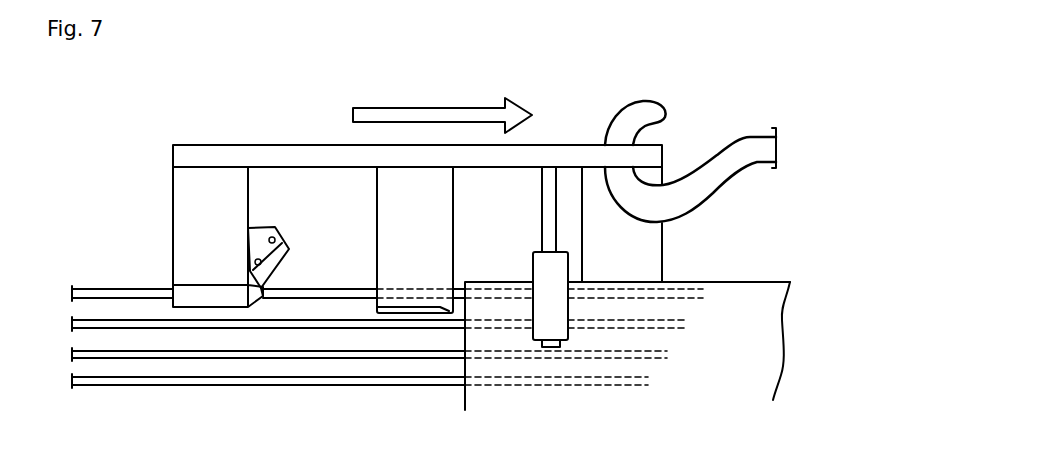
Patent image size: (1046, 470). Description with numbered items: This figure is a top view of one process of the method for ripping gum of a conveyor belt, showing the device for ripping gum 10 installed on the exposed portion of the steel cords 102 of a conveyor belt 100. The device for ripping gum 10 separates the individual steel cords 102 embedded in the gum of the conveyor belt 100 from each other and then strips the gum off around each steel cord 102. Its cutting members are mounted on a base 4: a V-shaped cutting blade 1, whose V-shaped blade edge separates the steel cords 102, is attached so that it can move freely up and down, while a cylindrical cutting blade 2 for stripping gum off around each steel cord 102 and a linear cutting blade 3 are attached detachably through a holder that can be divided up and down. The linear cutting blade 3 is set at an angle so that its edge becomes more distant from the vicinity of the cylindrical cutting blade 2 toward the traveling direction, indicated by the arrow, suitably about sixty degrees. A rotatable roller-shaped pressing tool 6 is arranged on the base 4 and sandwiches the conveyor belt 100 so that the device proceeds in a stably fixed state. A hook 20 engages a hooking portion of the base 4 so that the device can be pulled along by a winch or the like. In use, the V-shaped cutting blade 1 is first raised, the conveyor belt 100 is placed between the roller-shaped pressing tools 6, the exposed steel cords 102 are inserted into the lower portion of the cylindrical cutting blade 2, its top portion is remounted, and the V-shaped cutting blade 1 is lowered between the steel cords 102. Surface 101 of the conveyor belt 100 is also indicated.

The V-shaped cutting blade 1 is at (410, 312).
The cylindrical cutting blade 2 is at (261, 297).
The linear cutting blade 3 is at (280, 252).
The base 4 is at (277, 157).
The roller-shaped pressing tool 6 is at (563, 272).
The device for ripping gum 10 is at (383, 251).
The hook 20 is at (706, 178).
The conveyor belt 100 is at (672, 320).
The workpiece surface 101 is at (740, 297).
The steel cord 102 is at (125, 295).